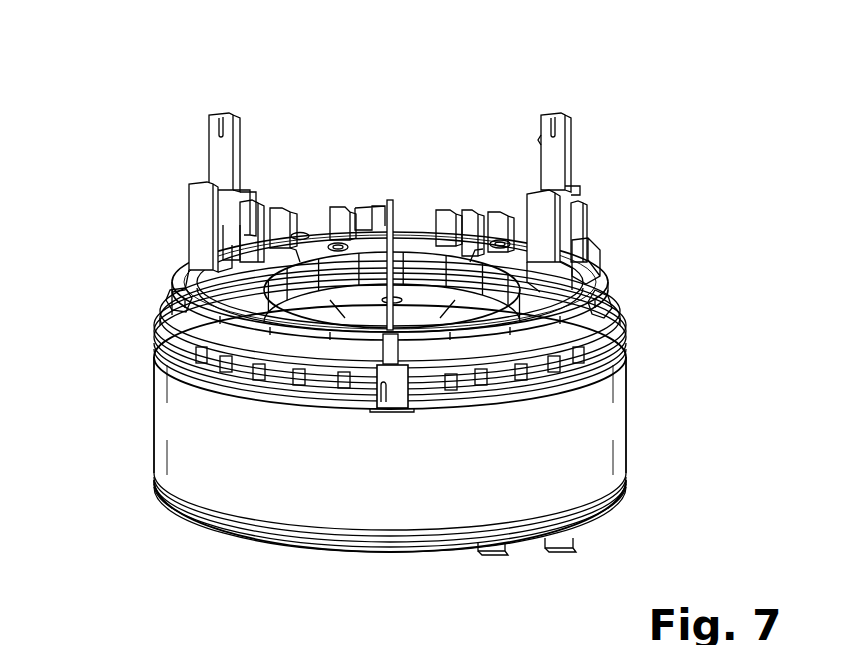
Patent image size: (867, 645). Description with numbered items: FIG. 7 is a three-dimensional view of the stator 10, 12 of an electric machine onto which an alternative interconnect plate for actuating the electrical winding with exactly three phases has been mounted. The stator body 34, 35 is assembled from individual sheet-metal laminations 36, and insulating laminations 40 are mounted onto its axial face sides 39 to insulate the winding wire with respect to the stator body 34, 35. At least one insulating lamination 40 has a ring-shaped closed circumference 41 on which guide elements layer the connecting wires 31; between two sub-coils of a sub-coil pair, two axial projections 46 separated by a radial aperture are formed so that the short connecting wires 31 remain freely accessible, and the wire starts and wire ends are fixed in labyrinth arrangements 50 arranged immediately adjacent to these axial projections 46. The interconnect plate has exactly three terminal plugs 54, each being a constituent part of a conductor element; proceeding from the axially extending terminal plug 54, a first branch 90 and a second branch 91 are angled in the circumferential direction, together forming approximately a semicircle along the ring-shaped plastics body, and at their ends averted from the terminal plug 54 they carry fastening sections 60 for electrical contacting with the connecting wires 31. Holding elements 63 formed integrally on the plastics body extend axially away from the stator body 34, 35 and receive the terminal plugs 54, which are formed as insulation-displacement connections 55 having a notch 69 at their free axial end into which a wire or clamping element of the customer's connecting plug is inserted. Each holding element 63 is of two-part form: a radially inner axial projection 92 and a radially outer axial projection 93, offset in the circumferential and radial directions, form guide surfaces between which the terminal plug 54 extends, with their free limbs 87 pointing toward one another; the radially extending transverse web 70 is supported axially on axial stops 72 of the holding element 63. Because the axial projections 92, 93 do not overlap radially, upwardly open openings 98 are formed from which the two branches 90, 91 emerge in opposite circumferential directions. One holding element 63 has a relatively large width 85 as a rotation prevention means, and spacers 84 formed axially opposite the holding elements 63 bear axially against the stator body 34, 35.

The stator 10 is at (345, 92).
The stator 12 is at (415, 337).
The connecting wires 31 is at (290, 215).
The stator body 34 is at (630, 450).
The housing wall 35 is at (390, 428).
The sheet-metal laminations 36 is at (180, 390).
The axial face sides 39 is at (378, 410).
The insulating lamination 40 is at (600, 366).
The ring-shaped closed circumference 41 is at (565, 542).
The axial projections 46 is at (338, 213).
The labyrinth arrangement 50 is at (371, 192).
The terminal plugs 54 is at (632, 125).
The insulation-displacement connections 55 is at (554, 152).
The fastening sections 60 is at (470, 215).
The holding elements 63 is at (158, 229).
The notch 69 is at (222, 118).
The transverse web 70 is at (585, 190).
The axial stops 72 is at (588, 208).
The spacers 84 is at (399, 397).
The width 85 is at (396, 302).
The free limbs 87 is at (588, 250).
The first branch 90 is at (410, 232).
The second branch 91 is at (620, 338).
The radially inner axial projection 92 is at (265, 205).
The radially outer axial projection 93 is at (200, 211).
The openings 98 is at (232, 232).